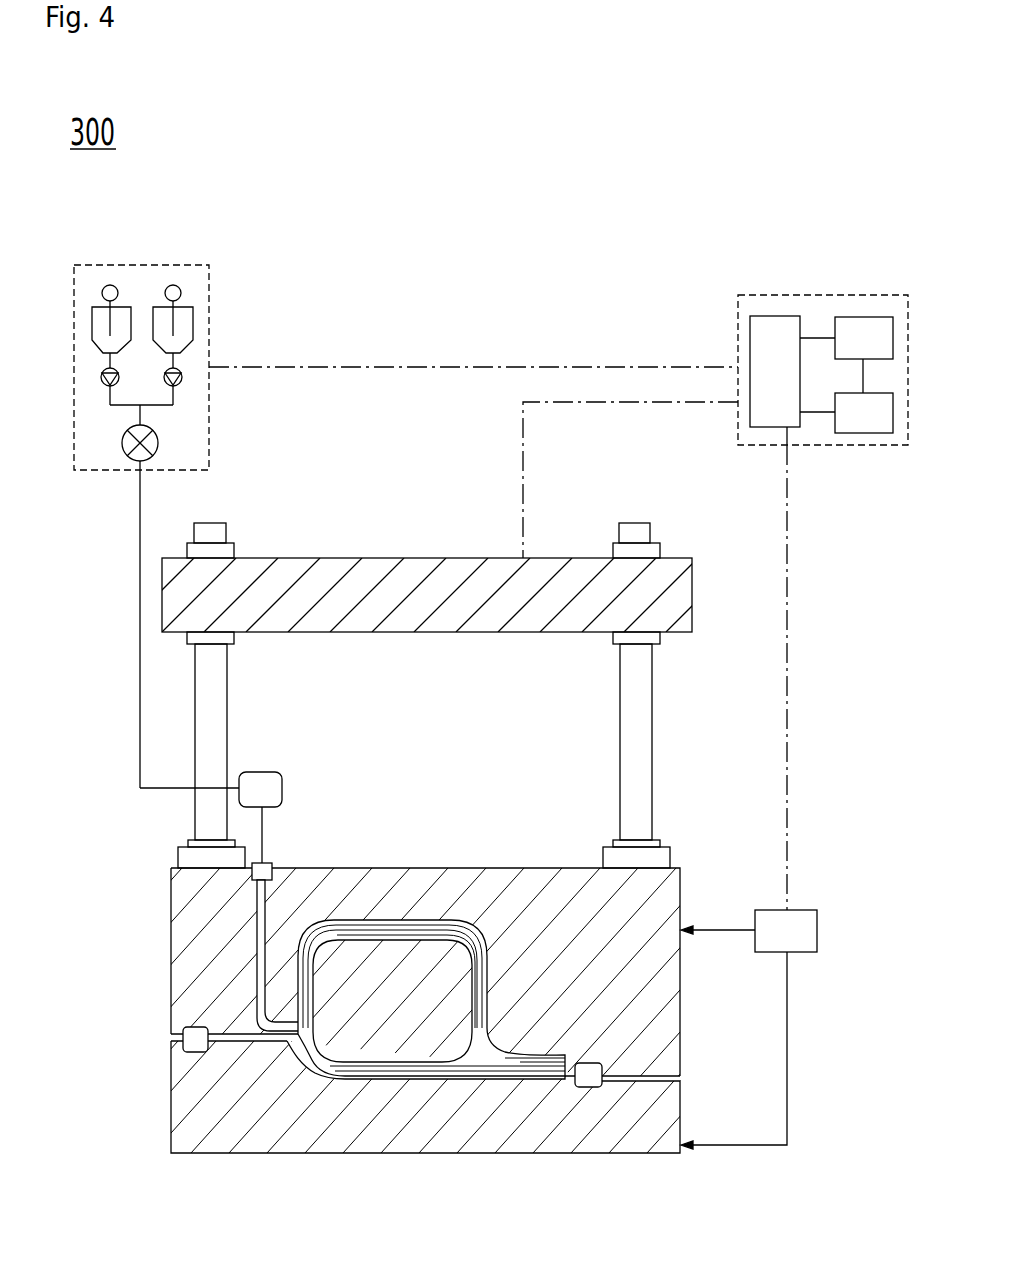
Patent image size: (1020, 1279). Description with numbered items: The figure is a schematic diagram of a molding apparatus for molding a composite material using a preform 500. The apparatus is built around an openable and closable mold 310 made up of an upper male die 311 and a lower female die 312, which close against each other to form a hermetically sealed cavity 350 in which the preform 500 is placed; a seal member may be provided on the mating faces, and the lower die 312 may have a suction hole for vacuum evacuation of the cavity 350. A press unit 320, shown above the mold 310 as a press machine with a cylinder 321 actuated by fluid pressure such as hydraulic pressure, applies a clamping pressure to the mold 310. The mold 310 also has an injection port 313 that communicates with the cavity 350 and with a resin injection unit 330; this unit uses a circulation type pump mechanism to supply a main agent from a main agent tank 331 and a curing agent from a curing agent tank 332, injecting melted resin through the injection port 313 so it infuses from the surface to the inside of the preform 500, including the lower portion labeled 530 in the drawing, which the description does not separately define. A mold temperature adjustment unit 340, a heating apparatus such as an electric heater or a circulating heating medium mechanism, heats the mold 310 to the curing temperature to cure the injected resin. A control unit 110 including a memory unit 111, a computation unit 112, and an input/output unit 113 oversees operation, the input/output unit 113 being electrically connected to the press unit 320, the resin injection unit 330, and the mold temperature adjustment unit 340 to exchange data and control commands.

The control unit 110 is at (824, 326).
The memory unit 111 is at (880, 338).
The computation unit 112 is at (880, 412).
The input/output unit 113 is at (763, 337).
The mold 310 is at (452, 1010).
The upper die 311 is at (186, 1012).
The lower die 312 is at (186, 1076).
The injection port 313 is at (285, 1040).
The press unit 320 is at (441, 546).
The cylinder 321 is at (228, 700).
The resin injection unit 330 is at (181, 502).
The main agent tank 331 is at (100, 315).
The curing agent tank 332 is at (162, 315).
The mold temperature adjustment unit 340 is at (805, 934).
The cavity 350 is at (345, 920).
The preform 500 is at (373, 935).
The flange portion of workpiece 530 is at (400, 1035).